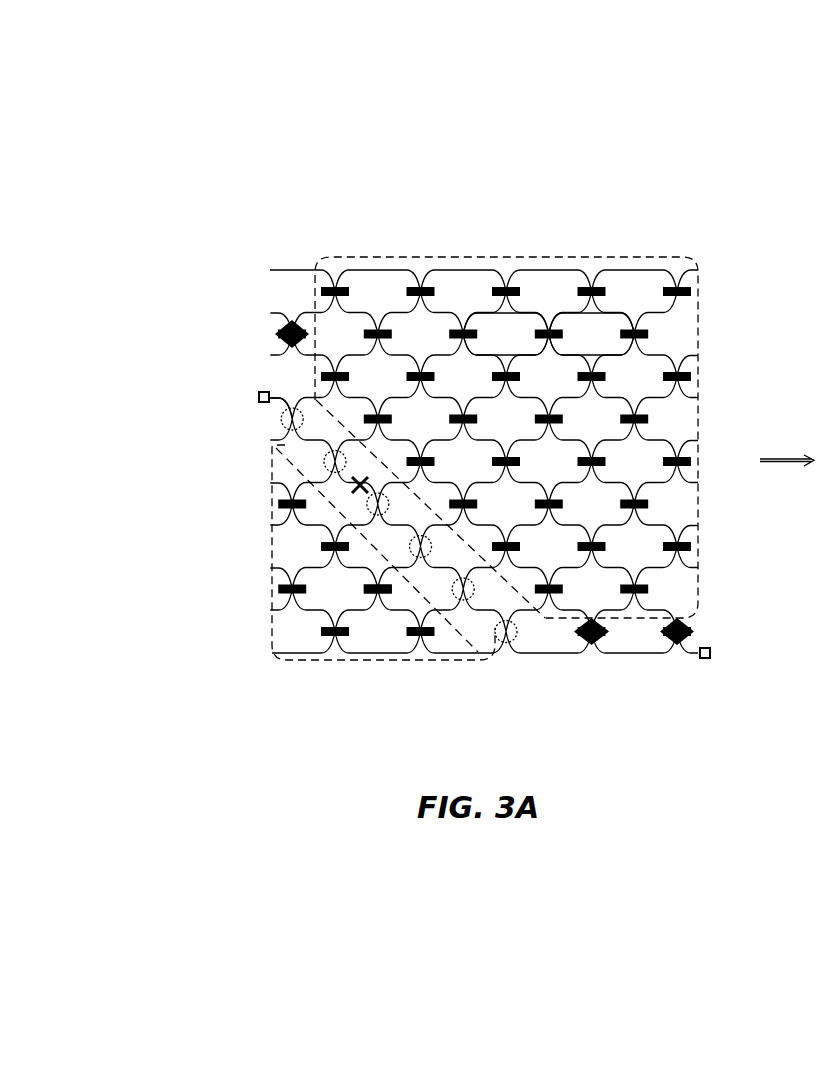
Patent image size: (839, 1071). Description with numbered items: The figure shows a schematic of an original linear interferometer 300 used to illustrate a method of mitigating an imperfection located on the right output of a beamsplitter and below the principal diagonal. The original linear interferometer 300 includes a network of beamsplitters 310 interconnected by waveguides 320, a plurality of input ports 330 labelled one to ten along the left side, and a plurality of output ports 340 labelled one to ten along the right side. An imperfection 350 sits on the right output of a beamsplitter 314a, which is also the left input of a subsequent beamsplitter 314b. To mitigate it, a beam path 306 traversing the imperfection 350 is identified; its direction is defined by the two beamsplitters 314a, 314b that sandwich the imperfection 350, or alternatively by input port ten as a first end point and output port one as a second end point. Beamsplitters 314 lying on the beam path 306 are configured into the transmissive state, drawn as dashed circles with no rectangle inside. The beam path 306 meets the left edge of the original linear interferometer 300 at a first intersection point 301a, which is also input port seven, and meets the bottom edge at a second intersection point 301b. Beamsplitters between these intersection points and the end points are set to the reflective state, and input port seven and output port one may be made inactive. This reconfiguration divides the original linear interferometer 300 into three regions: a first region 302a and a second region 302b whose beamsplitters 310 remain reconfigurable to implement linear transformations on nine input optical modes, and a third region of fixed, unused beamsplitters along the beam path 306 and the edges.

The original linear interferometer 300 is at (476, 178).
The first region 302a is at (428, 257).
The second region 302b is at (272, 513).
The input ports 330 is at (240, 243).
The output ports 340 is at (734, 244).
The waveguides 320 is at (614, 350).
The beam path 306 is at (288, 387).
The first intersection point 301a is at (254, 390).
The second intersection point 301b is at (522, 660).
The beamsplitter 314a is at (310, 453).
The beamsplitter 314b is at (358, 510).
The beamsplitters on the beam path 314 is at (458, 618).
The imperfection 350 is at (350, 489).
The beamsplitters 310 is at (370, 601).